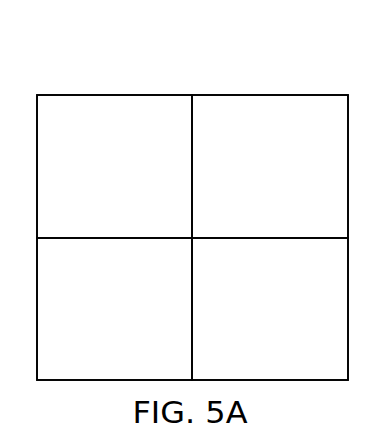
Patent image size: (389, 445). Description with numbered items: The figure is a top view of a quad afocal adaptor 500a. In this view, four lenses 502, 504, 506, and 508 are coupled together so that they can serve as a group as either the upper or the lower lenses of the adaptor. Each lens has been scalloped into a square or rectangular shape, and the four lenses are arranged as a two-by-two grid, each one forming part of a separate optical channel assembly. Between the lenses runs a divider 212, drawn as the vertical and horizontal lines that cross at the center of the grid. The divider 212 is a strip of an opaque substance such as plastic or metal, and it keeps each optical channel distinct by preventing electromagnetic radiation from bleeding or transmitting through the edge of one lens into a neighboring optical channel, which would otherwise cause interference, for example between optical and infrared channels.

The quad afocal adaptor 500a is at (167, 78).
The divider 212 is at (192, 136).
The lens 502 is at (97, 178).
The lens 504 is at (97, 320).
The lens 506 is at (252, 178).
The lens 508 is at (252, 320).